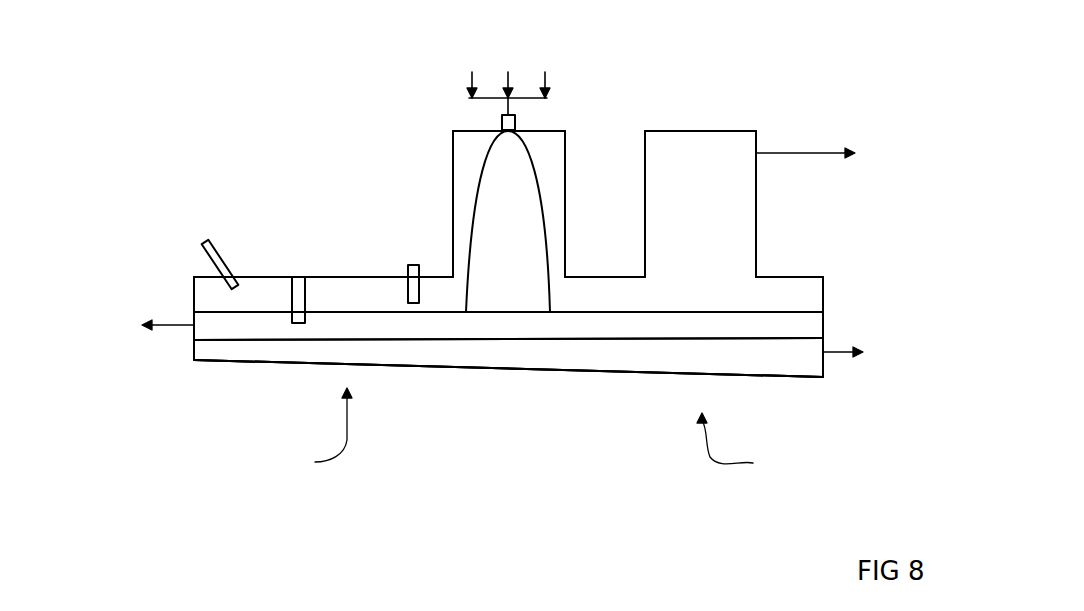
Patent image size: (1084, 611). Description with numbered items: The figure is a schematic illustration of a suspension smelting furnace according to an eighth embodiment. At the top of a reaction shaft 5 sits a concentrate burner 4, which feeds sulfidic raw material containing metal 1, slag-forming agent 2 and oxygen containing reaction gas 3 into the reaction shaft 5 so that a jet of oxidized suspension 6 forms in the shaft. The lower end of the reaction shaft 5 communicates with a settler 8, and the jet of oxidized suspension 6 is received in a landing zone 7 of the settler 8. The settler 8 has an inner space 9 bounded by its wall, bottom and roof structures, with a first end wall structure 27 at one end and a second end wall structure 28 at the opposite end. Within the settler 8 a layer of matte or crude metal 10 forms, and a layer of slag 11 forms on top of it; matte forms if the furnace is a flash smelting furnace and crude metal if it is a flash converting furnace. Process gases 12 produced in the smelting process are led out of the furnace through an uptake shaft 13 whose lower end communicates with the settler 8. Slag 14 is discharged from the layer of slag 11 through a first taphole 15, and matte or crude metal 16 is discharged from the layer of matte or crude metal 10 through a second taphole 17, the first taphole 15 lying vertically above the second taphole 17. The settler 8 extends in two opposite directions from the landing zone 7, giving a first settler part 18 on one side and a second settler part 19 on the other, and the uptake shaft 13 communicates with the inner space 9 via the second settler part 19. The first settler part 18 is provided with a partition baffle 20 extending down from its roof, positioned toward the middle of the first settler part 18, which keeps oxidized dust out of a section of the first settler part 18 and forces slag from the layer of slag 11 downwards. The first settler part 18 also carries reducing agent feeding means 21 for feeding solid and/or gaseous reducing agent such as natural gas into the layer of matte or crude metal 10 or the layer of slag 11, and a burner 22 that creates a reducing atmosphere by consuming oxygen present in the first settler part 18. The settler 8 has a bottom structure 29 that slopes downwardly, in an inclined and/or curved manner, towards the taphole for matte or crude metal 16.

The sulfidic raw material containing metal 1 is at (472, 70).
The slag-forming agent 2 is at (508, 70).
The oxygen containing reaction gas 3 is at (545, 70).
The concentrate burner 4 is at (500, 120).
The reaction shaft 5 is at (462, 177).
The jet of oxidized suspension 6 is at (490, 218).
The landing zone 7 is at (500, 295).
The settler 8 is at (194, 352).
The inner space 9 is at (598, 304).
The layer of matte or crude metal 10 is at (587, 351).
The layer of slag 11 is at (662, 328).
The process gases 12 is at (825, 150).
The uptake shaft 13 is at (756, 207).
The slag 14 is at (147, 325).
The first taphole 15 is at (194, 317).
The matte or crude metal 16 is at (861, 352).
The second taphole 17 is at (823, 358).
The first settler part 18 is at (315, 433).
The second settler part 19 is at (743, 442).
The partition baffle 20 is at (302, 280).
The reducing agent feeding means 21 is at (413, 303).
The burner 22 is at (205, 242).
The first end wall structure 27 is at (194, 290).
The second end wall structure 28 is at (823, 295).
The bottom structure 29 is at (550, 372).